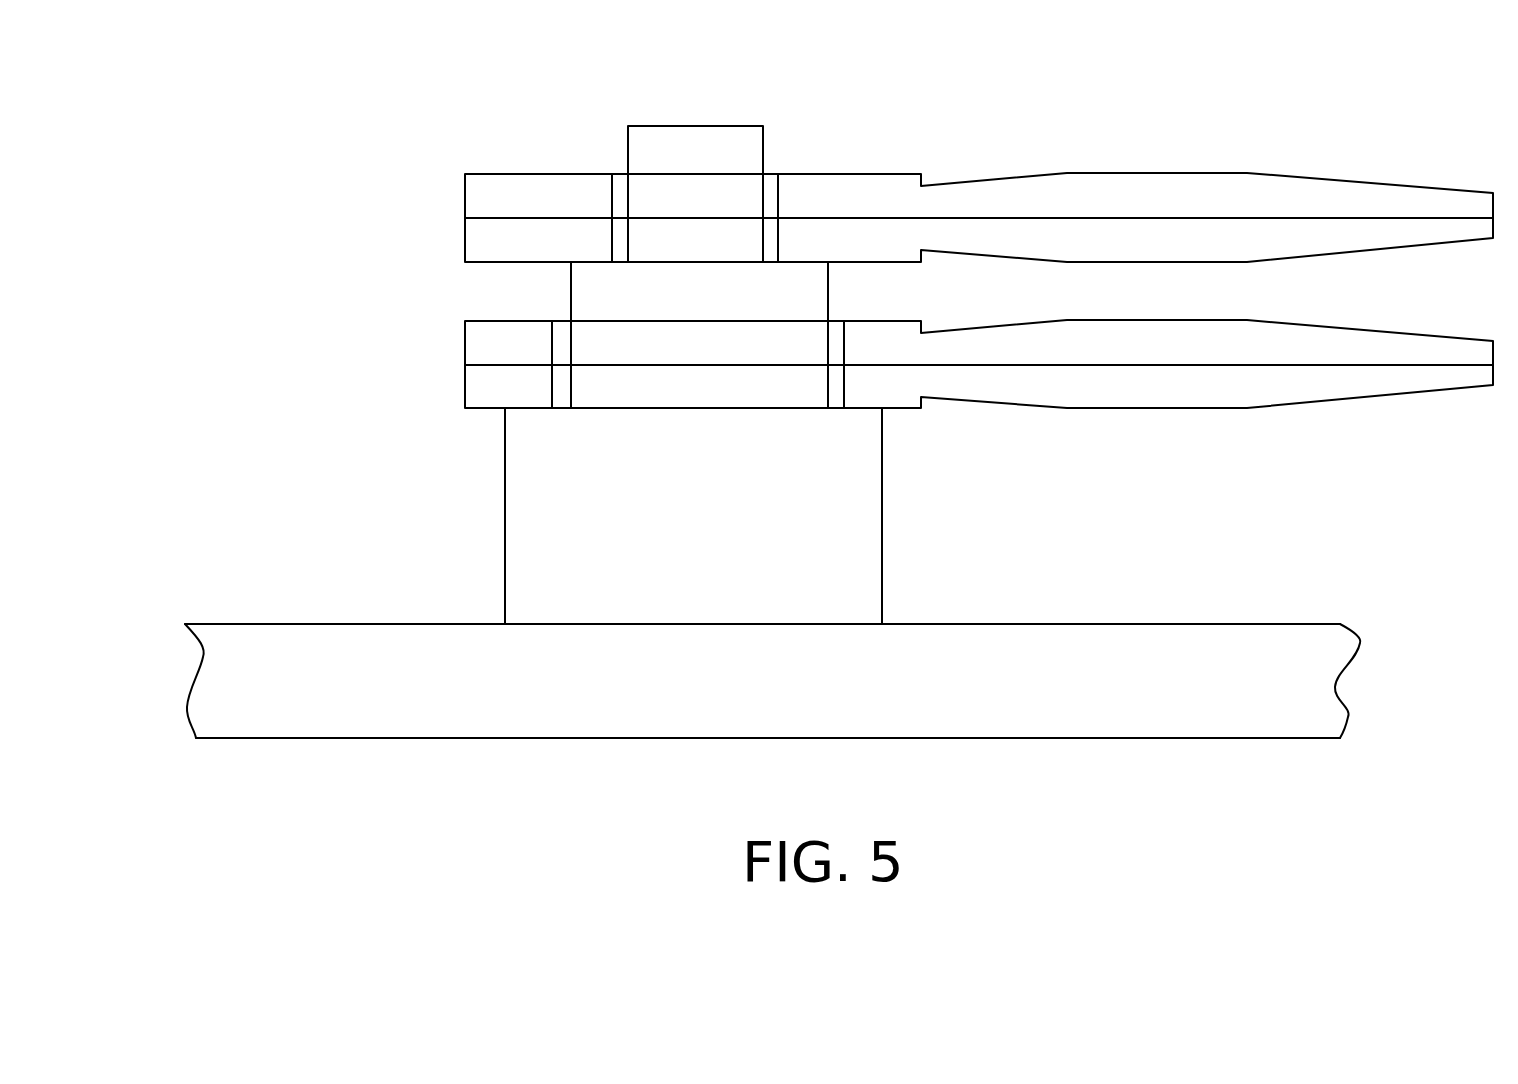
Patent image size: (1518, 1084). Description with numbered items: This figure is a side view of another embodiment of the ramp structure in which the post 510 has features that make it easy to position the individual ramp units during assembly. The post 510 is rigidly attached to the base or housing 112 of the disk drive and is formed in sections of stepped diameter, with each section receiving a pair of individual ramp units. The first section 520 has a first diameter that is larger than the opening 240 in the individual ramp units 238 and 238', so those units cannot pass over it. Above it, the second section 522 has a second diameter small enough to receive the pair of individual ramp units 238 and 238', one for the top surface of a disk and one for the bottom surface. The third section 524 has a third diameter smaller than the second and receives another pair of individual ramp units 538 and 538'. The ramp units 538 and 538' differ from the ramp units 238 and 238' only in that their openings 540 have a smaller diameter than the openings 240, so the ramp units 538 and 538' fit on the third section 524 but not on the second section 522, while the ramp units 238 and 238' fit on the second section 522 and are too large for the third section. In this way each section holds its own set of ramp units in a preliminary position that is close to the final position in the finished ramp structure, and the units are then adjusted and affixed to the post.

The housing 112 is at (1183, 622).
The first section 520 is at (520, 539).
The post 510 is at (870, 540).
The individual ramp unit 238 is at (939, 364).
The individual ramp unit 238' is at (653, 384).
The opening 240 is at (552, 385).
The second section 522 is at (574, 294).
The individual ramp unit 538 is at (939, 217).
The individual ramp unit 538' is at (653, 237).
The opening 540 is at (617, 192).
The third section 524 is at (725, 135).